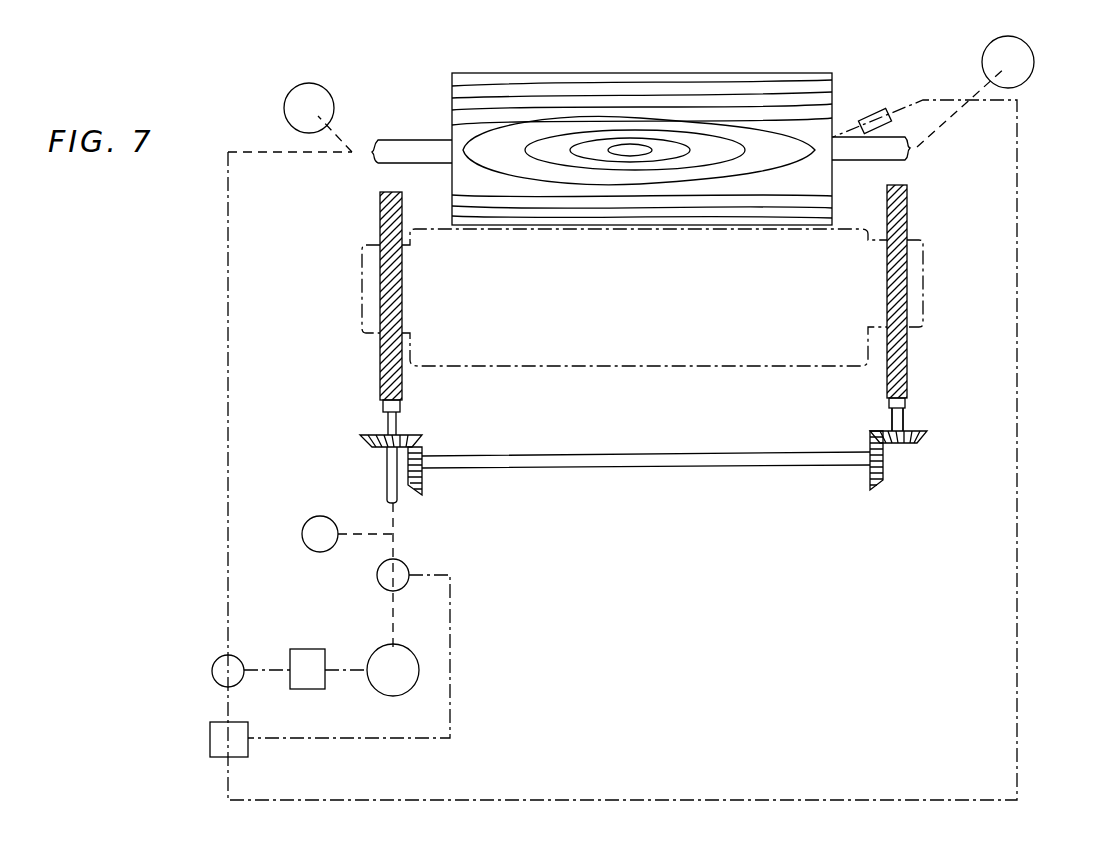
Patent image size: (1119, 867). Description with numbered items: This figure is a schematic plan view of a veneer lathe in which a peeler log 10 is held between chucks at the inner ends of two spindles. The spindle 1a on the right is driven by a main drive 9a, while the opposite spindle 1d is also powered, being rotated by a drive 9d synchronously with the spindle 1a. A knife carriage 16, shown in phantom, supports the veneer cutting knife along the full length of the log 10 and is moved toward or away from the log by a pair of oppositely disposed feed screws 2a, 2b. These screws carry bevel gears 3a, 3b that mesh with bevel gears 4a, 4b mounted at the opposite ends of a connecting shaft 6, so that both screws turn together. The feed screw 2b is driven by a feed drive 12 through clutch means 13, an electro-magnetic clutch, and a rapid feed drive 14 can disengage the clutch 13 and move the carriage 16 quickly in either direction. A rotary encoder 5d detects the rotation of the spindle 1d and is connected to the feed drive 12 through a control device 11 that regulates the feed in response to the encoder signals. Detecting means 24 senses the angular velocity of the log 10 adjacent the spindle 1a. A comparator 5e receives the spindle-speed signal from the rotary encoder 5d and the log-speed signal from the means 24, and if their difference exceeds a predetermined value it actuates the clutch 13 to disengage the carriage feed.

The log 10 is at (462, 92).
The spindle 1a is at (893, 152).
The powered spindle 1d is at (415, 145).
The main drive 9a is at (1015, 70).
The drive 9d is at (284, 108).
The detecting means 24 is at (877, 114).
The feed screw 2a is at (905, 345).
The feed screw 2b is at (385, 352).
The knife carriage 16 is at (543, 358).
The bevel gear 3a is at (928, 437).
The bevel gear 3b is at (368, 442).
The bevel gear 4a is at (868, 474).
The bevel gear 4b is at (425, 481).
The connecting shaft 6 is at (707, 460).
The rapid feed drive 14 is at (313, 526).
The clutch means 13 is at (403, 568).
The feed drive 12 is at (380, 655).
The control device 11 is at (305, 655).
The rotary encoder 5d is at (218, 663).
The comparator 5e is at (218, 728).